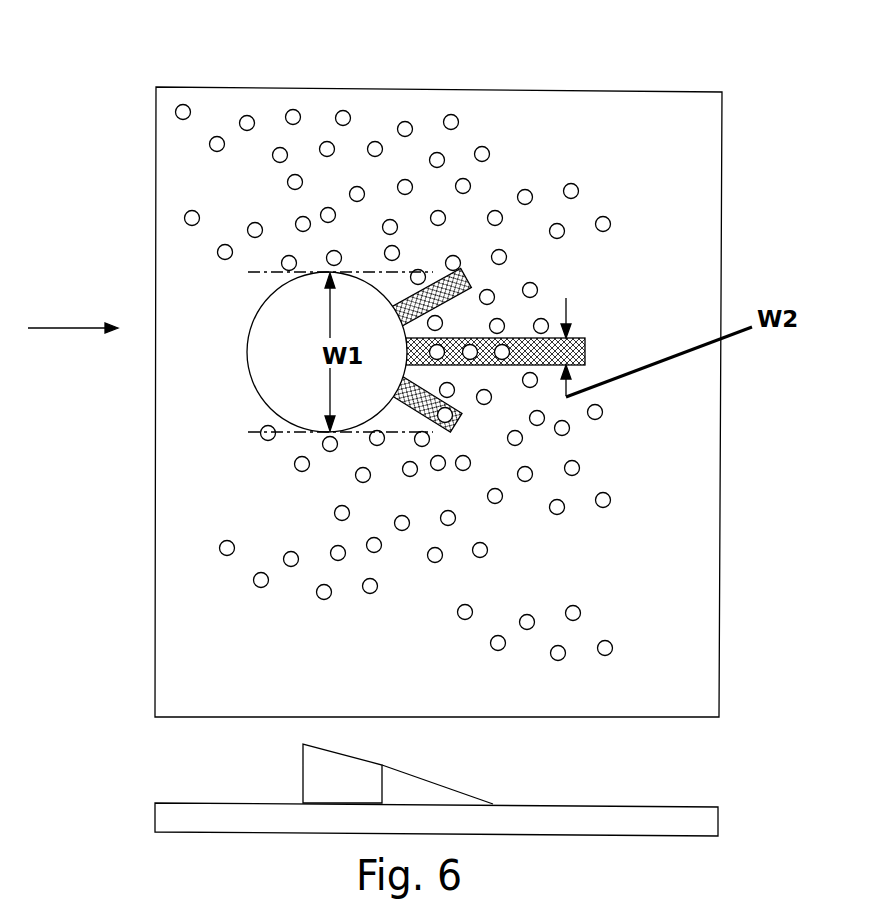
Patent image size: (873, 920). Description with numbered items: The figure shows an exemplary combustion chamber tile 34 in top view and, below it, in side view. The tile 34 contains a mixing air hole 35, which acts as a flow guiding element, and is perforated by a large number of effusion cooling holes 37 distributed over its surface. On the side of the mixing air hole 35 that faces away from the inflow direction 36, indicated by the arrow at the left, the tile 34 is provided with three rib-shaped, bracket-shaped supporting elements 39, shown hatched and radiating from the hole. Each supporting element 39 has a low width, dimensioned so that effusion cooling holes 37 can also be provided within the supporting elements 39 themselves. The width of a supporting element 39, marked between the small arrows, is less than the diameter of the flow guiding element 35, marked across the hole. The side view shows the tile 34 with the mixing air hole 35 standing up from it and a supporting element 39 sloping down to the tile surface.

The combustion chamber tile 34 is at (632, 140).
The mixing air hole 35 is at (317, 342).
The inflow direction 36 is at (55, 329).
The effusion cooling holes 37 is at (460, 412).
The supporting elements 39 is at (466, 276).